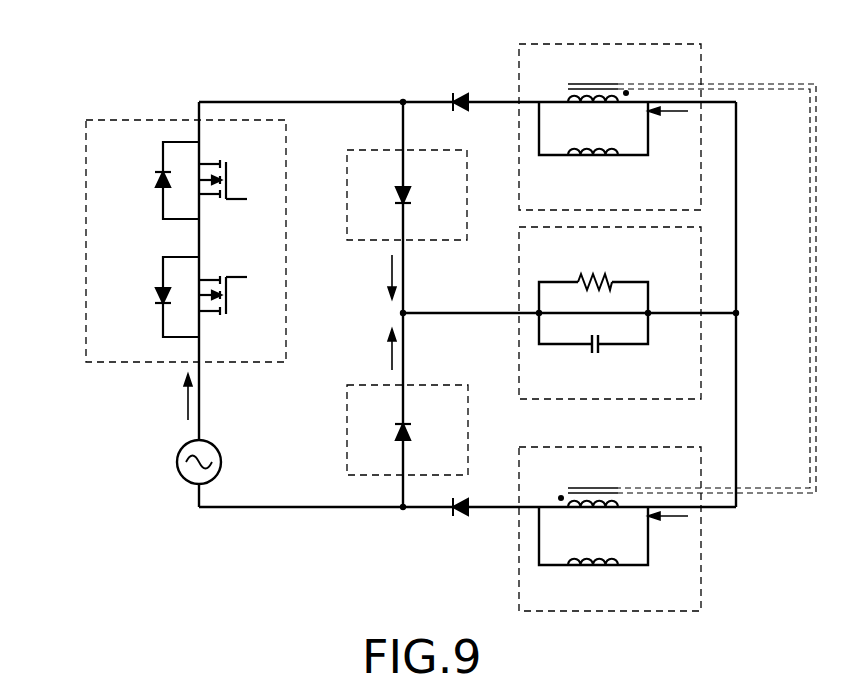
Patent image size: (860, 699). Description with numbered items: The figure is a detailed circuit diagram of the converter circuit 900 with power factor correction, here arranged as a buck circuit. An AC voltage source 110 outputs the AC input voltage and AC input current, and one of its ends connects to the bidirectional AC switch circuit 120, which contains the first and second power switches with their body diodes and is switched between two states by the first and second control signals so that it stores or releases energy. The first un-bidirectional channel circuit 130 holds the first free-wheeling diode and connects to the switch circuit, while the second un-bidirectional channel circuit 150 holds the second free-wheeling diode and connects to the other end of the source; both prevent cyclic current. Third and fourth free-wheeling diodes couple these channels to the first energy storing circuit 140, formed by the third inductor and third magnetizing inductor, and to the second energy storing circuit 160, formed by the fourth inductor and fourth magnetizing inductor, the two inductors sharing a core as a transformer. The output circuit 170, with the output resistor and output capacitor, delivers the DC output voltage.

The converter circuit 900 is at (66, 46).
The AC voltage source 110 is at (217, 446).
The bidirectional AC switch circuit 120 is at (145, 118).
The first un-bidirectional channel circuit 130 is at (379, 148).
The first energy storing circuit 140 is at (701, 57).
The second un-bidirectional channel circuit 150 is at (378, 477).
The second energy storing circuit 160 is at (701, 470).
The output circuit 170 is at (701, 258).